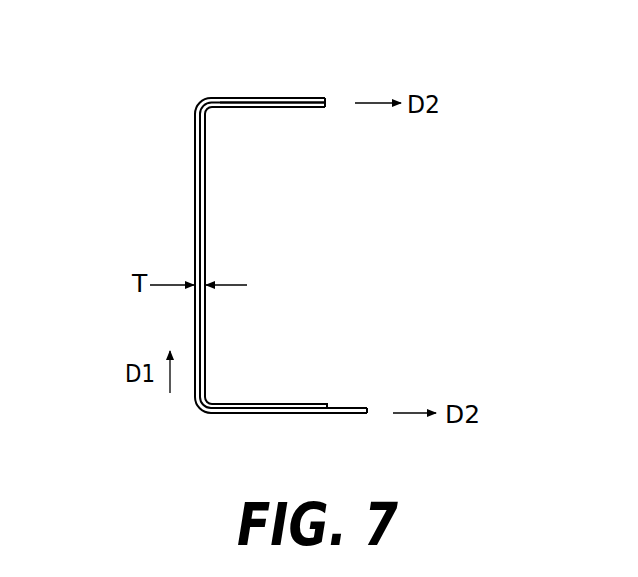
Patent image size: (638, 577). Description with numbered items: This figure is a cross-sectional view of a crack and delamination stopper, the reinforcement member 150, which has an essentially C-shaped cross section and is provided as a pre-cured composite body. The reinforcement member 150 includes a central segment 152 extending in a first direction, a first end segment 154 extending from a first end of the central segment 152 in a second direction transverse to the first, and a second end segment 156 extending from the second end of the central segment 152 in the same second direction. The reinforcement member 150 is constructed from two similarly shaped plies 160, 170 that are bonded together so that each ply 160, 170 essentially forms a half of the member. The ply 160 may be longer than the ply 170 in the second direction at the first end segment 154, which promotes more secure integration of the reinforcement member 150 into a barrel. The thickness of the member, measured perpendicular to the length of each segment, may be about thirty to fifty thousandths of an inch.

The reinforcement member 150 is at (276, 226).
The central segment 152 is at (207, 270).
The first end segment 154 is at (285, 391).
The second end segment 156 is at (242, 97).
The ply 160 is at (195, 253).
The ply 170 is at (206, 310).